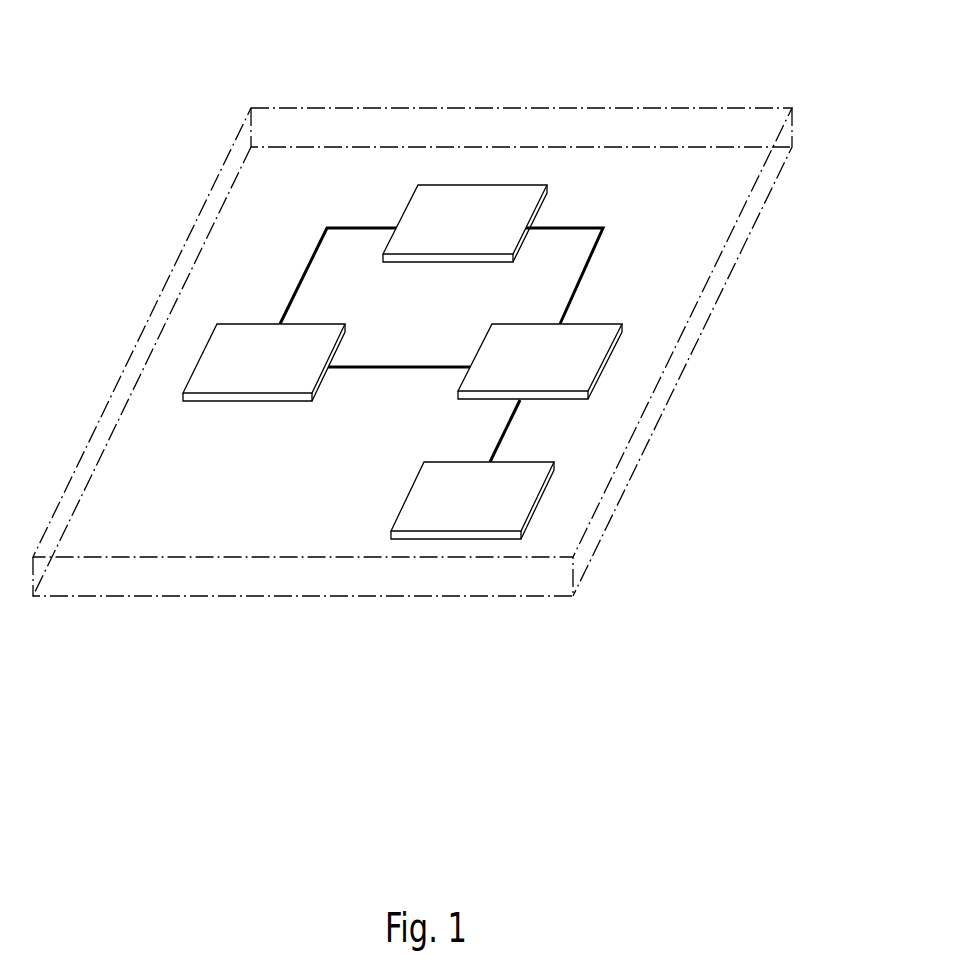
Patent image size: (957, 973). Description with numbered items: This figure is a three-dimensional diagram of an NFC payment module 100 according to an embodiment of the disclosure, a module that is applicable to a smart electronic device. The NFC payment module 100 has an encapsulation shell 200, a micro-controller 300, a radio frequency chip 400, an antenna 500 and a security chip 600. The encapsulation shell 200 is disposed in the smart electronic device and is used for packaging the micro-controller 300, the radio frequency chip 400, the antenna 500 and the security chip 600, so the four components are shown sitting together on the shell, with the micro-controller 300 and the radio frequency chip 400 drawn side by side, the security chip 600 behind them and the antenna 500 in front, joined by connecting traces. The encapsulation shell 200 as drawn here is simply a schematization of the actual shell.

The NFC payment module 100 is at (215, 59).
The encapsulation shell 200 is at (710, 108).
The micro-controller 300 is at (218, 363).
The radio frequency chip 400 is at (587, 368).
The antenna 500 is at (526, 500).
The security chip 600 is at (458, 197).